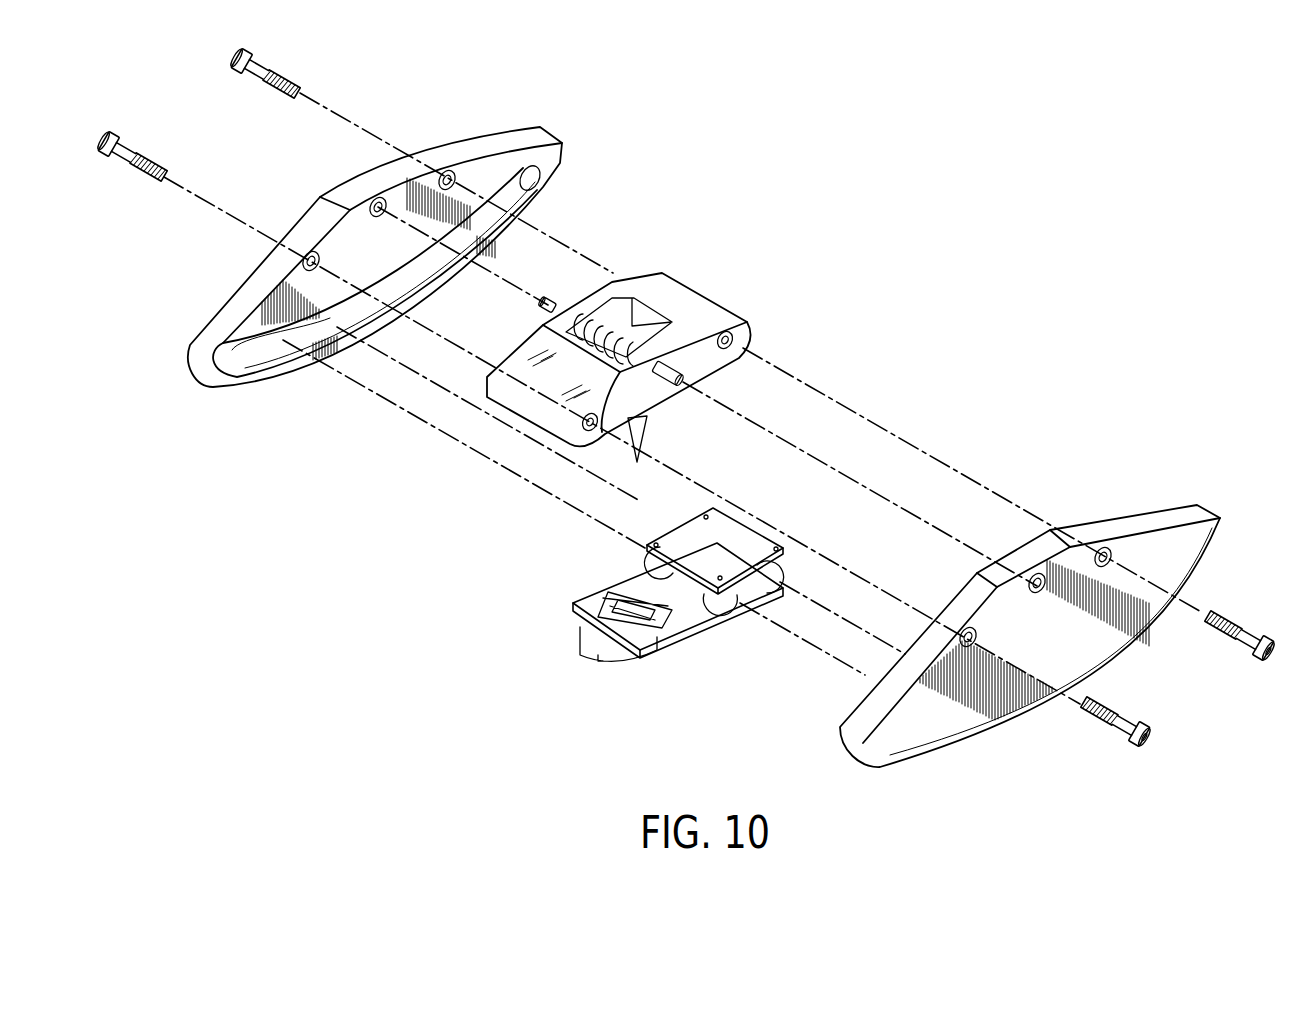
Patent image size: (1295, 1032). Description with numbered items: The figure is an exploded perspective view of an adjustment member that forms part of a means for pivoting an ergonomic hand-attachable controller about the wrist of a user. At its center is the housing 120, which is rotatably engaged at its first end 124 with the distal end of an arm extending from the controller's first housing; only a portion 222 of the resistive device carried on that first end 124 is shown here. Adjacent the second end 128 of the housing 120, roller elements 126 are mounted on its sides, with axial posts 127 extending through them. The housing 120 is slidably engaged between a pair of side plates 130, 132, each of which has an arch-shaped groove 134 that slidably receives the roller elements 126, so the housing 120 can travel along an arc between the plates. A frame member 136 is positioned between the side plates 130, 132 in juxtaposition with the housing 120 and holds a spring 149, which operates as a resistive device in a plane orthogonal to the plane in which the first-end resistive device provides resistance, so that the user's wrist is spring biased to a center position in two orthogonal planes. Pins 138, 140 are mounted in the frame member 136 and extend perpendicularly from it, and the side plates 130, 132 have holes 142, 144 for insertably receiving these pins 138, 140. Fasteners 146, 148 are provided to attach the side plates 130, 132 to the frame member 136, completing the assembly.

The housing 120 is at (700, 650).
The first end 124 is at (573, 610).
The roller elements 126 is at (645, 565).
The axial posts 127 is at (722, 576).
The second end 128 is at (752, 528).
The side plate 130 is at (200, 330).
The side plate 132 is at (846, 738).
The arch-shaped groove 134 is at (243, 360).
The frame member 136 is at (690, 293).
The pin 138 is at (554, 298).
The pin 140 is at (668, 390).
The holes 142 is at (360, 183).
The holes 144 is at (1037, 595).
The fasteners 146 is at (130, 148).
The fasteners 148 is at (1246, 640).
The spring 149 is at (636, 282).
The portion of resistive device 222 is at (604, 662).